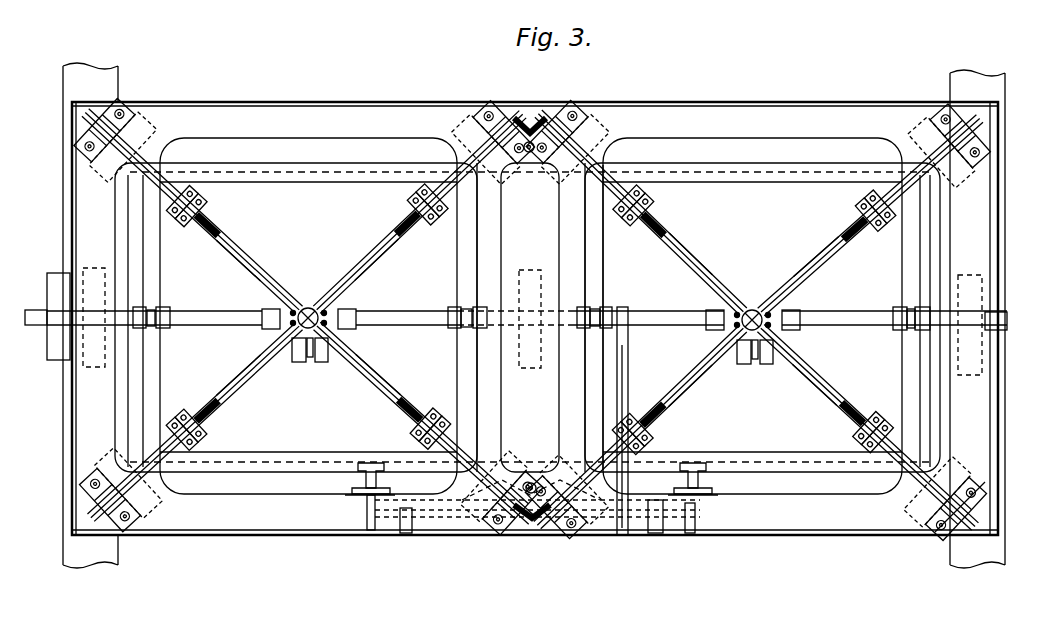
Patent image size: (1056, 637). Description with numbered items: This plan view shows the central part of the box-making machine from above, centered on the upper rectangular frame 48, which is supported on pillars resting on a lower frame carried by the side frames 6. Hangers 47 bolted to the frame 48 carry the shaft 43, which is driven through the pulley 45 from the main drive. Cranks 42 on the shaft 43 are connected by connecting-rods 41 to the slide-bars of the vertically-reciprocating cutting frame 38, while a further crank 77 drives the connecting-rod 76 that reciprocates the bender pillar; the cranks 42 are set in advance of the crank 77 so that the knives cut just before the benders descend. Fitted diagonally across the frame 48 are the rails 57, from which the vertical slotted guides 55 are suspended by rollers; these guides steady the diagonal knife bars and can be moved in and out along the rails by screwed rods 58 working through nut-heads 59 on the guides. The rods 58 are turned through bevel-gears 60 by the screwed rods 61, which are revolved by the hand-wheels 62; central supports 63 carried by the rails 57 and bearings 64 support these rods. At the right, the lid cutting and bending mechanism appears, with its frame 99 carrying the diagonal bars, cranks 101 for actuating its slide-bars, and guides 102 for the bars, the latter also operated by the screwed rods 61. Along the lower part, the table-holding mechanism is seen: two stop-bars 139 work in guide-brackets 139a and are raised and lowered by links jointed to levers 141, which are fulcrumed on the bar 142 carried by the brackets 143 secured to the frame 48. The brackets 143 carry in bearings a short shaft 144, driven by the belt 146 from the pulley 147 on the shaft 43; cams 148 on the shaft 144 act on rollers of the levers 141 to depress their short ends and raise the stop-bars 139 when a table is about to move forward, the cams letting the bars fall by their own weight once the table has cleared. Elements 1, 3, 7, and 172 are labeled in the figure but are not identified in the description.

The center panel member 1 is at (483, 317).
The panel 3 is at (940, 426).
The side frames 6 is at (534, 315).
The center panel member 7 is at (577, 317).
The vertically-reciprocating frame 38 is at (748, 444).
The connecting-rods 41 is at (466, 329).
The cranks 42 is at (480, 328).
The shaft 43 is at (527, 320).
The pulley 45 is at (50, 333).
The hangers 47 is at (983, 278).
The rectangular frame 48 is at (535, 318).
The vertical slotted guides 55 is at (436, 416).
The diagonal rails 57 is at (800, 372).
The screwed rods 58 is at (352, 408).
The nut-heads 59 is at (870, 410).
The bevel-gears 60 is at (540, 520).
The screwed rods 61 is at (870, 436).
The hand-wheels 62 is at (952, 530).
The central supports 63 is at (752, 308).
The bearings 64 is at (980, 500).
The connecting-rod 76 is at (745, 364).
The crank 77 is at (766, 364).
The frame 99 is at (598, 250).
The cranks 101 is at (905, 331).
The guides 102 is at (858, 393).
The stop-bars 139 is at (708, 482).
The guide-brackets 139a is at (675, 489).
The levers 141 is at (725, 496).
The bar 142 is at (405, 534).
The brackets 143 is at (656, 535).
The short shaft 144 is at (462, 505).
The belt 146 is at (640, 372).
The pulley 147 is at (629, 330).
The cams 148 is at (370, 532).
The bar 172 is at (692, 535).